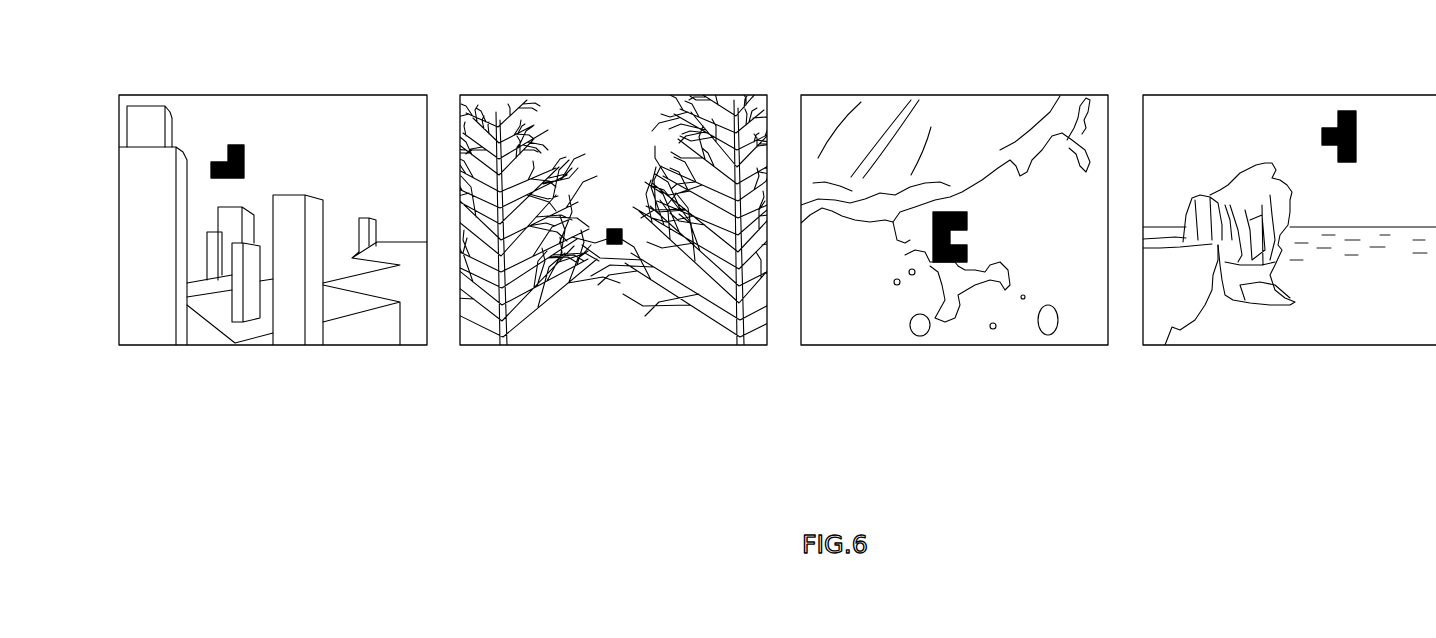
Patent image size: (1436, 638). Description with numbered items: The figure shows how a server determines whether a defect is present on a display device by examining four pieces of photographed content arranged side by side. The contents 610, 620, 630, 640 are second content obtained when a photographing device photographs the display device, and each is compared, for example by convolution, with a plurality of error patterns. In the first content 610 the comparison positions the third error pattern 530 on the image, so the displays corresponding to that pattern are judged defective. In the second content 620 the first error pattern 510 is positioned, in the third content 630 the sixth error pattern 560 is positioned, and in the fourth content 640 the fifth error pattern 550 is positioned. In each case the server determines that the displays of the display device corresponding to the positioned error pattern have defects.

The first error pattern 510 is at (613, 228).
The third error pattern 530 is at (236, 145).
The fifth error pattern 550 is at (1346, 111).
The sixth error pattern 560 is at (947, 212).
The (2-1)th content 610 is at (273, 230).
The (2-2)th content 620 is at (602, 232).
The (2-3)th content 630 is at (954, 230).
The (2-4)th content 640 is at (1289, 227).